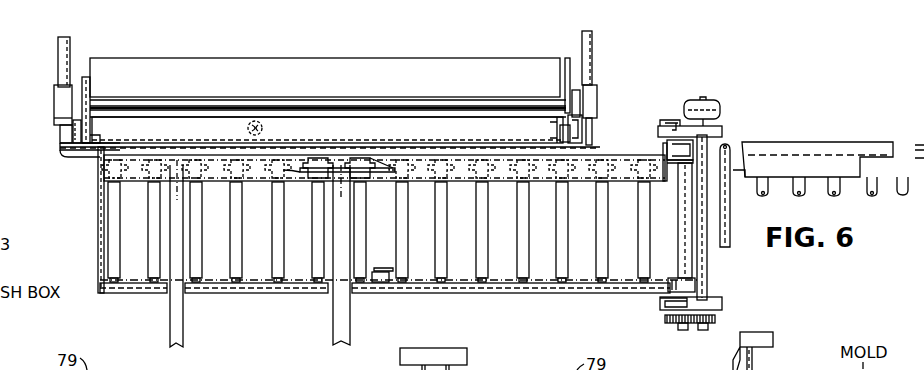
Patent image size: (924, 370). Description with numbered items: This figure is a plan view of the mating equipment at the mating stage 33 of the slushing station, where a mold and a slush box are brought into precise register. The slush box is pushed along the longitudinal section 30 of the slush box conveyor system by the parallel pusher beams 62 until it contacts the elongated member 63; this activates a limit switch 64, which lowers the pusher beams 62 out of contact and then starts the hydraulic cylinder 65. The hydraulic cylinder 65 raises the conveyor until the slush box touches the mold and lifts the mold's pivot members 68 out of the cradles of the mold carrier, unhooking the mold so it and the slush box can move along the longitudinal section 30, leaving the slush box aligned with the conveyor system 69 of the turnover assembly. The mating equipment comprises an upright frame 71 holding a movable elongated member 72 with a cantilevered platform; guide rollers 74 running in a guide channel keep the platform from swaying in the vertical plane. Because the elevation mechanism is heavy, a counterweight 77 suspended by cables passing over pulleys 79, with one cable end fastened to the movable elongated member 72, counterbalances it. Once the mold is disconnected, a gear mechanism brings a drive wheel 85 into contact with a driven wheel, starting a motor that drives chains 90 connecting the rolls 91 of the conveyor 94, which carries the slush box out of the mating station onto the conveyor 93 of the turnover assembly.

The longitudinal section of the slush box conveyor system 30 is at (117, 265).
The mating stage 33 is at (497, 256).
The parallel pusher beams 62 is at (181, 320).
The elongated member 63 is at (667, 173).
The limit switch 64 is at (381, 283).
The hydraulic cylinder 65 is at (248, 128).
The pivot members 68 is at (460, 352).
The conveyor system 69 is at (880, 176).
The upright frame 71 is at (72, 151).
The movable elongated member 72 is at (95, 148).
The guide rollers 74 is at (80, 135).
The counterweight 77 is at (223, 67).
The pulleys 79 is at (90, 87).
The drive wheel 85 is at (684, 108).
The chains 90 is at (137, 173).
The rolls 91 is at (151, 254).
The conveyor 93 is at (803, 143).
The conveyor 94 is at (570, 290).